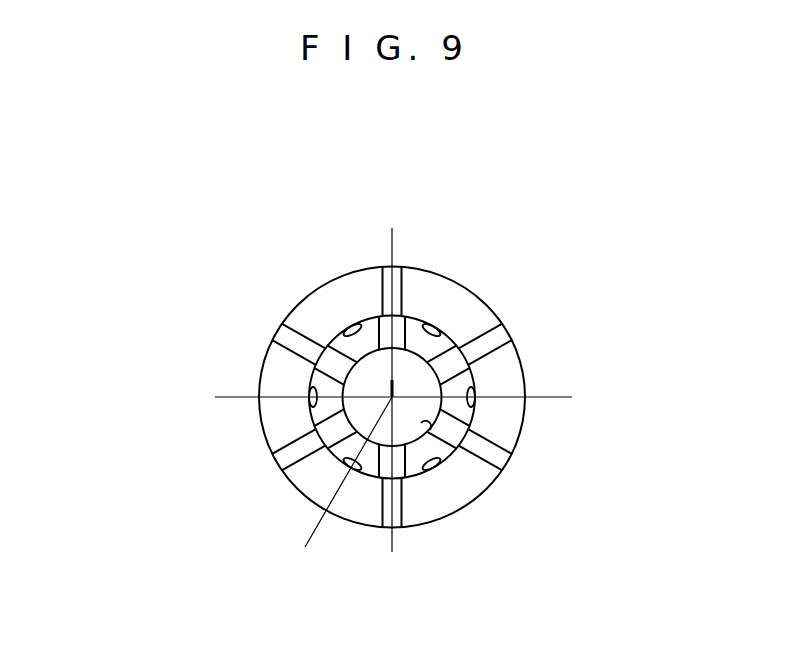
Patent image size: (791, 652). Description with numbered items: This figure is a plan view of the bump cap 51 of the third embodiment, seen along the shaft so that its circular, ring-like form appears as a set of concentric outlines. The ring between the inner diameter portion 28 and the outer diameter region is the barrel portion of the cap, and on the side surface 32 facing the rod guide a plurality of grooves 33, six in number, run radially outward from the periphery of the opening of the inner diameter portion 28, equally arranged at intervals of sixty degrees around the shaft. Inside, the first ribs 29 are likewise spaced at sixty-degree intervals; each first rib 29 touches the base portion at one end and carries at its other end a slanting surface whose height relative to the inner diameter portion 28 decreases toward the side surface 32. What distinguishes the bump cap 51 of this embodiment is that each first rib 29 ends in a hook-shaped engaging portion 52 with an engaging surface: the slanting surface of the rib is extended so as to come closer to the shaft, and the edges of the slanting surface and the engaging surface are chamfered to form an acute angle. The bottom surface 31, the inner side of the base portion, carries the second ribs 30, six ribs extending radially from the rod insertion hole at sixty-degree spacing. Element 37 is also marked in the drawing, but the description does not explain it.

The inner diameter portion 28 is at (318, 370).
The first ribs 29 is at (316, 394).
The hook-shaped engaging portion 52 is at (431, 322).
The second ribs 30 is at (358, 338).
The bottom surface 31 is at (343, 350).
The side surface 32 is at (472, 473).
The grooves 33 is at (492, 343).
The protrusion 37 is at (427, 426).
The bump cap 51 is at (608, 239).